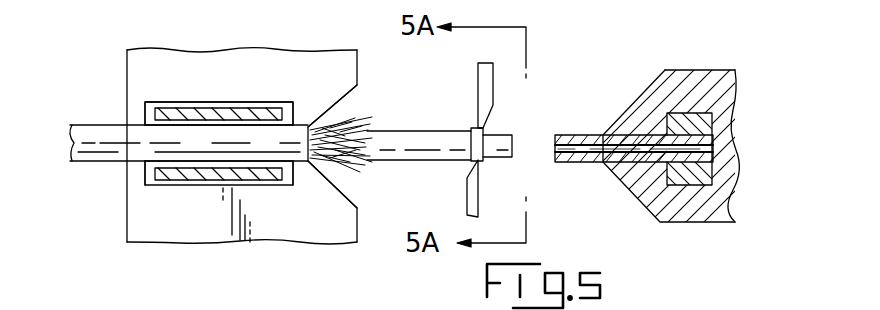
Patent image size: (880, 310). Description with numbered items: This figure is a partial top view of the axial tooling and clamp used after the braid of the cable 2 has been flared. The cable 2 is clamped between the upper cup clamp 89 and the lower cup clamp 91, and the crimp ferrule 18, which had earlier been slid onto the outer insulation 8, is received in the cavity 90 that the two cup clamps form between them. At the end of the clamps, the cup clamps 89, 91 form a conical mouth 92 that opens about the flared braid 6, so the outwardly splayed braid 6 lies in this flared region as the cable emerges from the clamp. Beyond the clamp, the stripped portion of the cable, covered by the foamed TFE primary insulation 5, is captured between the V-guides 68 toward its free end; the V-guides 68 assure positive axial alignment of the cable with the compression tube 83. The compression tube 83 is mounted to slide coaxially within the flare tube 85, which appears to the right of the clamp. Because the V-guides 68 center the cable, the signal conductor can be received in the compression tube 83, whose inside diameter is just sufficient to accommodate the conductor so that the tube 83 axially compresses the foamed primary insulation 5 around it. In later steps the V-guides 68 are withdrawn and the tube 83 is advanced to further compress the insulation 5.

The cable 2 is at (438, 131).
The primary insulation 5 is at (393, 130).
The braid 6 is at (358, 172).
The outer insulation 8 is at (88, 162).
The crimp ferrule 18 is at (167, 112).
The V-guides 68 is at (478, 77).
The compression tube 83 is at (582, 135).
The flare tube 85 is at (649, 85).
The upper cup clamp 89 is at (198, 58).
The cavity 90 is at (292, 103).
The lower cup clamp 91 is at (327, 227).
The conical mouth 92 is at (357, 197).